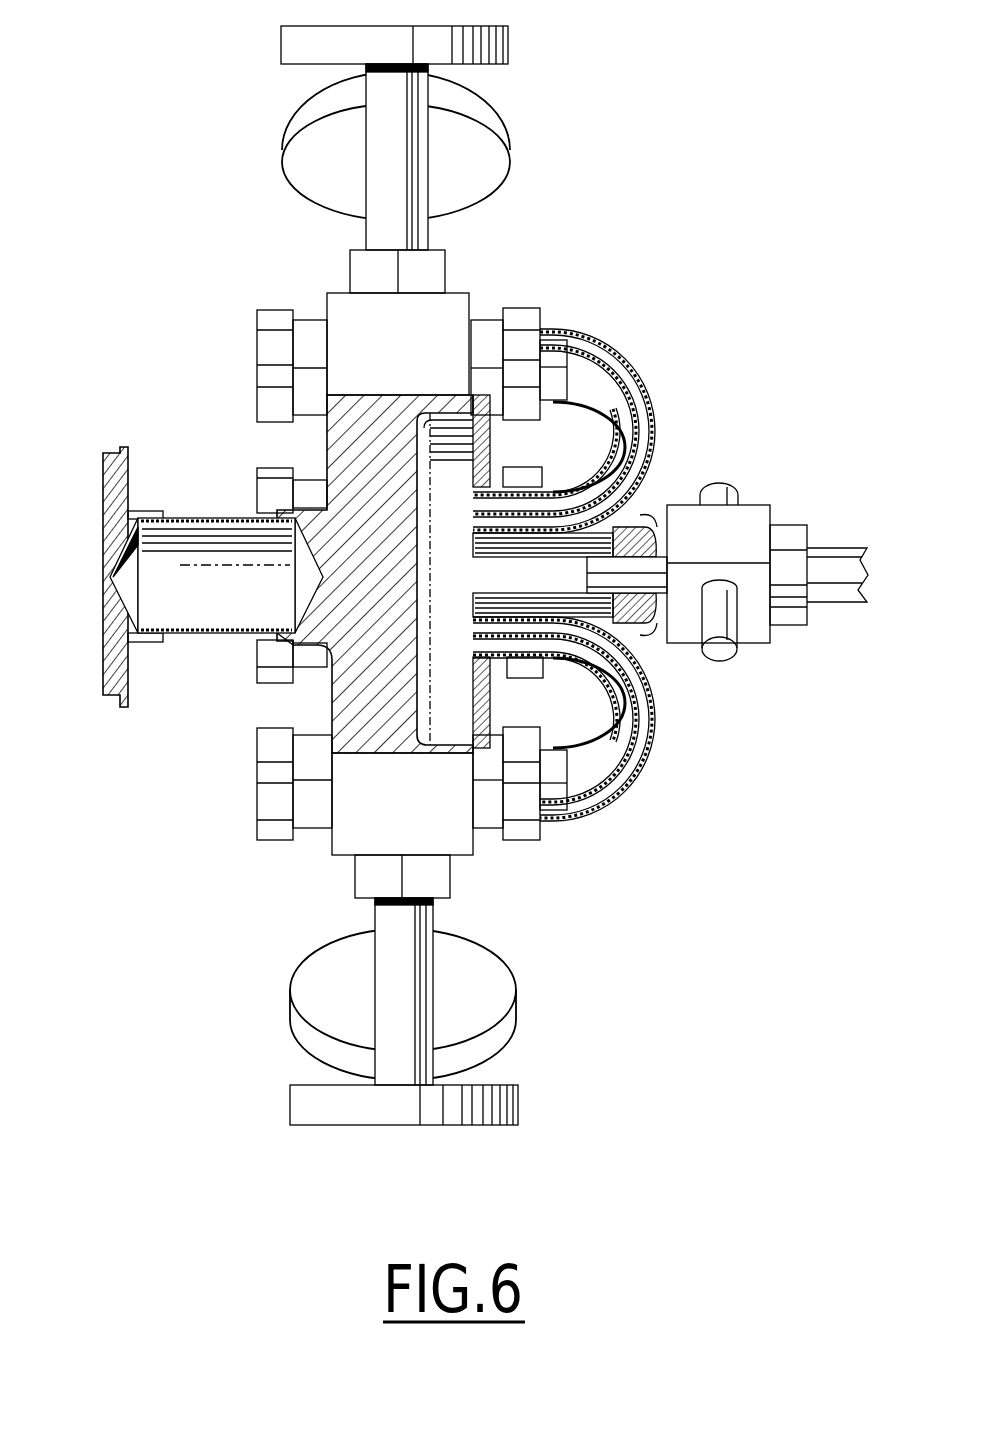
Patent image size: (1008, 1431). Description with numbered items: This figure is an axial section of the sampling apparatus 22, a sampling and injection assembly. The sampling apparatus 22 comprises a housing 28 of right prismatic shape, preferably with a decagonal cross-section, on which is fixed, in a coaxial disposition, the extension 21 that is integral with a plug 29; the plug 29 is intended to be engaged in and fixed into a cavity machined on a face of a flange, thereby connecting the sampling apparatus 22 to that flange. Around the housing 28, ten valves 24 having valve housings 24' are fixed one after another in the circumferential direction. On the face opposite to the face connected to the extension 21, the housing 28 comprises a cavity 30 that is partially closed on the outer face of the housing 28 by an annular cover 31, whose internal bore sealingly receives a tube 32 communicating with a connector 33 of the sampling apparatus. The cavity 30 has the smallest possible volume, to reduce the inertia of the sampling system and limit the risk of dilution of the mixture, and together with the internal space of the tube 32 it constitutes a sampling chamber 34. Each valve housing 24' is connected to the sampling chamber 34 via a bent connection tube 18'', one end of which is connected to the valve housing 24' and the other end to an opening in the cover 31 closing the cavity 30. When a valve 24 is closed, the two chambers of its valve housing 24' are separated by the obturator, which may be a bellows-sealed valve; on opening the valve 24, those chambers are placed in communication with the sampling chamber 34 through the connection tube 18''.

The connection tube 18'' is at (574, 557).
The extension 21 is at (213, 518).
The sampling apparatus 22 is at (497, 288).
The valve 24 is at (395, 159).
The valve housing 24' is at (363, 326).
The housing 28 is at (405, 748).
The plug 29 is at (108, 490).
The cavity 30 is at (457, 712).
The annular cover 31 is at (492, 452).
The tube 32 is at (640, 520).
The connector 33 is at (757, 630).
The sampling chamber 34 is at (536, 603).